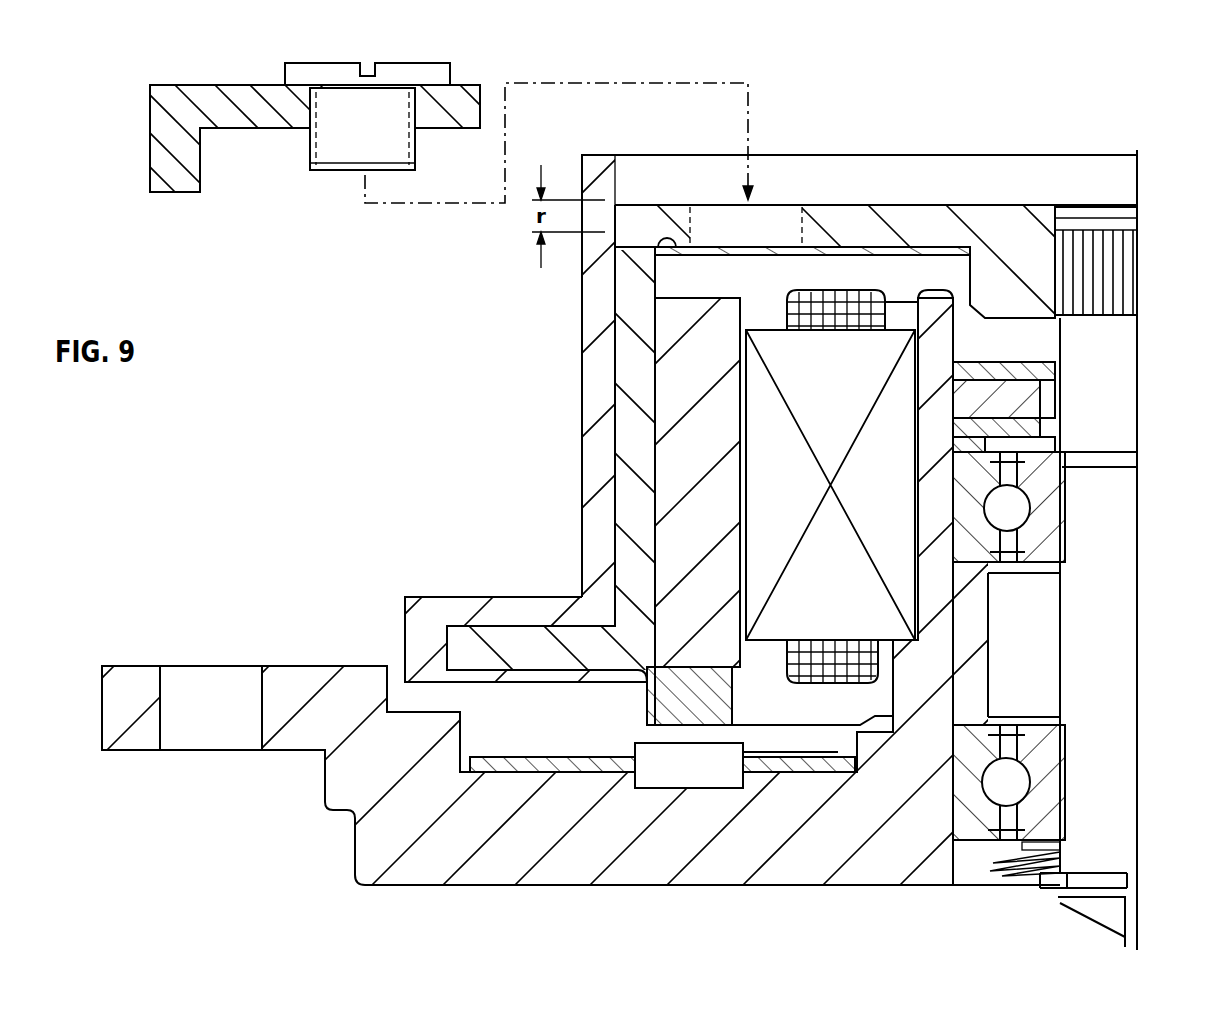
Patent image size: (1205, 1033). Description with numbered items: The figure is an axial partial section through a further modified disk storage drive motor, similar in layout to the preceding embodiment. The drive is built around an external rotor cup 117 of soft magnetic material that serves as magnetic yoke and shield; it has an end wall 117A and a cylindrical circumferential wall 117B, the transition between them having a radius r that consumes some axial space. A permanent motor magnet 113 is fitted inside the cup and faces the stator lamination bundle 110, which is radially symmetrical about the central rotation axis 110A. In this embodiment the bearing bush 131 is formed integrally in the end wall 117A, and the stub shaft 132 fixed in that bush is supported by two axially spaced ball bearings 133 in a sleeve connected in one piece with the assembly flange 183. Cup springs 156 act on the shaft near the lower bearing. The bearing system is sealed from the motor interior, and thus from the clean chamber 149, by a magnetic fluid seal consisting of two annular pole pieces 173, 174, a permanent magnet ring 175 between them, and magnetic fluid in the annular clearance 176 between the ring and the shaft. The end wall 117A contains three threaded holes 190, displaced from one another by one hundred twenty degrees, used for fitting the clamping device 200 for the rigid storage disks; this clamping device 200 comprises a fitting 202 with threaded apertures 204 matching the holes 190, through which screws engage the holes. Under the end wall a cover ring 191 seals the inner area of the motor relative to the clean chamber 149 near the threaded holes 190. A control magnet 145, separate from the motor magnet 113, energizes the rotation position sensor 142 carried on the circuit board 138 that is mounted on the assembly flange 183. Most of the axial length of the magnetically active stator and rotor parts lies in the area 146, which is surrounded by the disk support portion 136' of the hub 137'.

The fitting 202 is at (195, 85).
The clamping device 200 is at (138, 166).
The threaded apertures 204 is at (308, 118).
The area 146 is at (707, 262).
The threaded holes 190 is at (778, 215).
The cover ring 191 is at (848, 246).
The end wall 117A is at (988, 232).
The bearing bush 131 is at (1040, 232).
The external rotor cup 117 is at (630, 282).
The motor magnet 113 is at (667, 320).
The circumferential wall 117B is at (622, 378).
The disk support portion 136' is at (602, 516).
The clean chamber 149 is at (329, 478).
The hub 137' is at (526, 604).
The assembly flange 183 is at (304, 680).
The stator lamination bundle 110 is at (791, 503).
The annular pole piece 173 is at (1045, 375).
The permanent magnet ring 175 is at (1030, 390).
The annular clearance 176 is at (1045, 405).
The annular pole piece 174 is at (1040, 428).
The ball bearings 133 is at (1055, 508).
The stub shaft 132 is at (1103, 613).
The central rotation axis 110A is at (1134, 672).
The control magnet 145 is at (630, 730).
The circuit board 138 is at (613, 750).
The rotation position sensor 142 is at (712, 788).
The cup springs 156 is at (1025, 865).